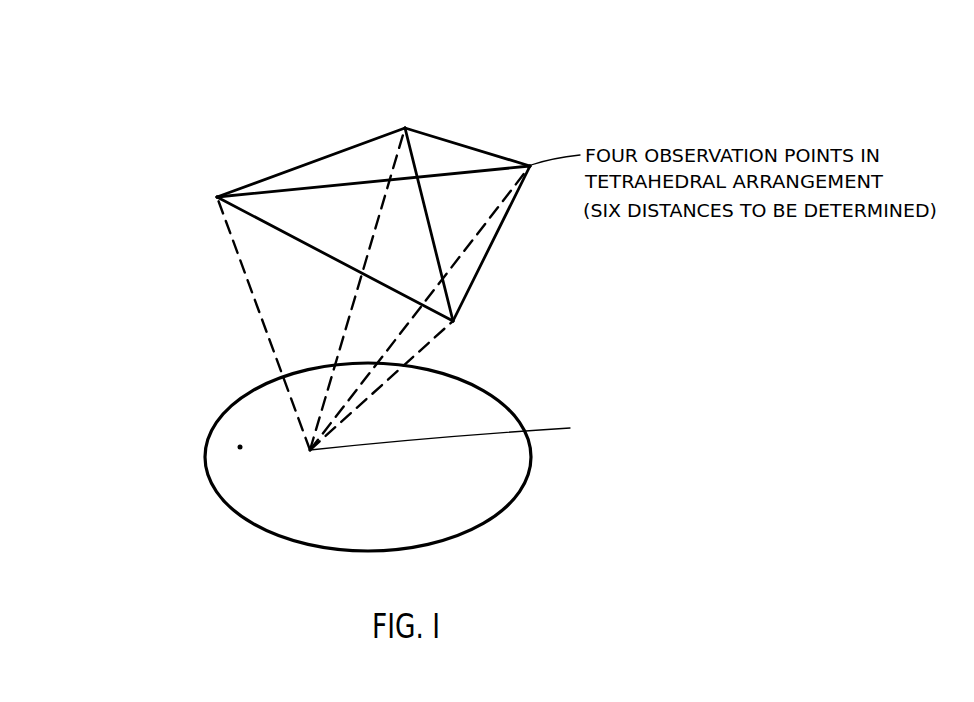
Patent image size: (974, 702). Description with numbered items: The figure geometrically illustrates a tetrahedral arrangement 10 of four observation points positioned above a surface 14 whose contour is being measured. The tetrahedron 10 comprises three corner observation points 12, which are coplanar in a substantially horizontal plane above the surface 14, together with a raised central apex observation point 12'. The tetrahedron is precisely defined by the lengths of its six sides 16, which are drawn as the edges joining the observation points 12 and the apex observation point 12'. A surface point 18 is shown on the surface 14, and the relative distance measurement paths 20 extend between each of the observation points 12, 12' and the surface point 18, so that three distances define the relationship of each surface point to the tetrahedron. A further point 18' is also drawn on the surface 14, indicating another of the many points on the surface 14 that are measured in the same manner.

The tetrahedral arrangement 10 is at (499, 106).
The observation point 12 is at (355, 227).
The raised central apex observation point 12' is at (413, 103).
The surface 14 is at (233, 507).
The side 16 is at (333, 186).
The surface point 18 is at (594, 492).
The another measured point on mirror surface 18' is at (195, 434).
The relative distance measurement path 20 is at (342, 335).